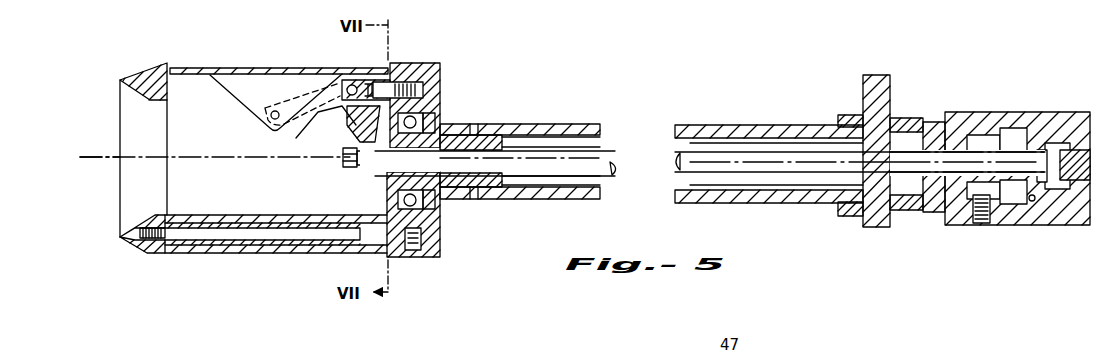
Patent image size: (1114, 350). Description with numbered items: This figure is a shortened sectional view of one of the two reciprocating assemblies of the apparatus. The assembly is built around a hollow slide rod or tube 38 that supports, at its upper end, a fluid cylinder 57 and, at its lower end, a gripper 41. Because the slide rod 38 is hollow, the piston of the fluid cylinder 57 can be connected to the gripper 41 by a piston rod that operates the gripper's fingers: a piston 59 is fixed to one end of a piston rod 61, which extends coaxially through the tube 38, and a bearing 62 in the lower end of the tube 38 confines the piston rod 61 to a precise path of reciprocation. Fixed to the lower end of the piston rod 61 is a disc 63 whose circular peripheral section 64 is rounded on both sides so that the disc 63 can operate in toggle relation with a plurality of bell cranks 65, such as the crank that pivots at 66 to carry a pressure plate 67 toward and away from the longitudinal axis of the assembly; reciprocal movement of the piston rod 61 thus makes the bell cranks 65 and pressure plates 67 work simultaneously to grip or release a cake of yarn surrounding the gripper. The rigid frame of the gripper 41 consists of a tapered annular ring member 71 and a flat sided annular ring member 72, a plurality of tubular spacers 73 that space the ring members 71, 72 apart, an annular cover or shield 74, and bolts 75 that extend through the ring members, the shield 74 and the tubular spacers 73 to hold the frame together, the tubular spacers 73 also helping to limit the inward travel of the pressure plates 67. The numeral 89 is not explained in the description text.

The slide rod 38 is at (760, 204).
The gripper 41 is at (272, 260).
The fluid cylinder 57 is at (1052, 232).
The piston 59 is at (1025, 206).
The piston rod 61 is at (812, 176).
The bearing 62 is at (490, 195).
The disc 63 is at (345, 160).
The circular peripheral section 64 is at (362, 142).
The bell crank 65 is at (314, 129).
The pivot 66 is at (351, 84).
The pressure plate 67 is at (190, 67).
The tapered annular ring member 71 is at (122, 240).
The flat sided annular ring member 72 is at (400, 258).
The tubular spacer 73 is at (320, 254).
The annular cover or shield 74 is at (432, 250).
The bolt 75 is at (230, 233).
The axis 89 is at (92, 150).